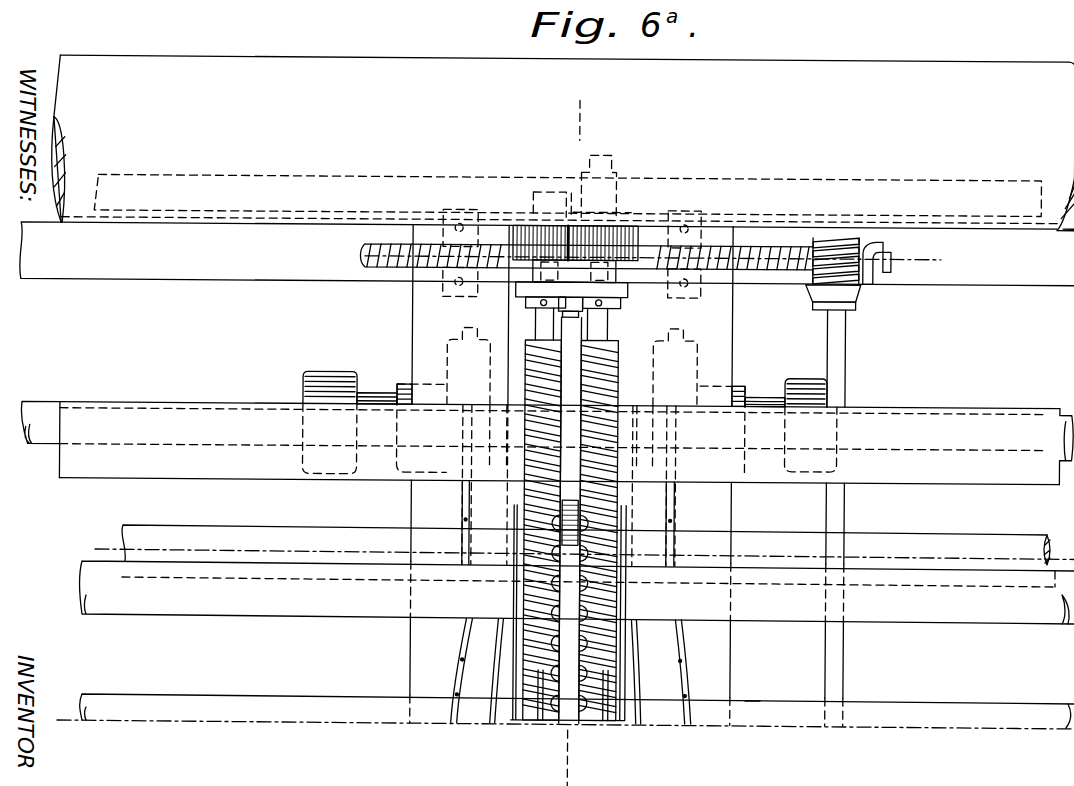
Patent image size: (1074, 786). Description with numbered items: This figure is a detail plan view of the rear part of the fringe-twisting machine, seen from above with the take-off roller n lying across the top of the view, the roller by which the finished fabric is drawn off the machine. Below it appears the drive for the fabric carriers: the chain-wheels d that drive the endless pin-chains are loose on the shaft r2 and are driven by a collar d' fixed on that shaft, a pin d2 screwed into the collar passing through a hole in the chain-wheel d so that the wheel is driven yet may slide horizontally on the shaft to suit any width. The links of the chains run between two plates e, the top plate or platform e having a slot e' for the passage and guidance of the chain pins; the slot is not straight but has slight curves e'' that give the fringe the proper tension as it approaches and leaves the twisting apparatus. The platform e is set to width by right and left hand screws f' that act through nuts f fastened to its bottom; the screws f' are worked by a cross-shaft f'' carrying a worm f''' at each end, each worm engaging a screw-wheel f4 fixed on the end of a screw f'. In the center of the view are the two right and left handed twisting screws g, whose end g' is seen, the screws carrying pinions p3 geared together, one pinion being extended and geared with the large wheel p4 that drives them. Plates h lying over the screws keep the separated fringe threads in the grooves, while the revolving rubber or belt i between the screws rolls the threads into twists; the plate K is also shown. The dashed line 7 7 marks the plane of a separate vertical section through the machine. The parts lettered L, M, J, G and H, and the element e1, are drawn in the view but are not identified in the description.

The roller n is at (562, 143).
The large wheel p4 is at (373, 177).
The pinions p3 is at (533, 235).
The section line 7 is at (581, 106).
The threaded shaft L is at (364, 260).
The bracket M is at (891, 258).
The right and left hand screws f' is at (572, 231).
The nuts f is at (559, 294).
The worm f''' is at (859, 282).
The screw-wheels f4 is at (830, 288).
The cross-shaft f'' is at (858, 518).
The plates (top plate or platform) e is at (572, 353).
The nut extension e1 is at (581, 485).
The slot e' is at (610, 523).
The curves e'' is at (565, 671).
The chain-wheels d is at (566, 413).
The collar d' is at (563, 424).
The pin d2 is at (380, 397).
The shaft r2 is at (38, 410).
The screws g is at (559, 530).
The end of the screw g' is at (540, 637).
The plates h is at (540, 667).
The revolving rubber or belt i is at (570, 627).
The bar J is at (584, 542).
The plate K is at (577, 580).
The bar G is at (565, 711).
The bar H is at (759, 708).